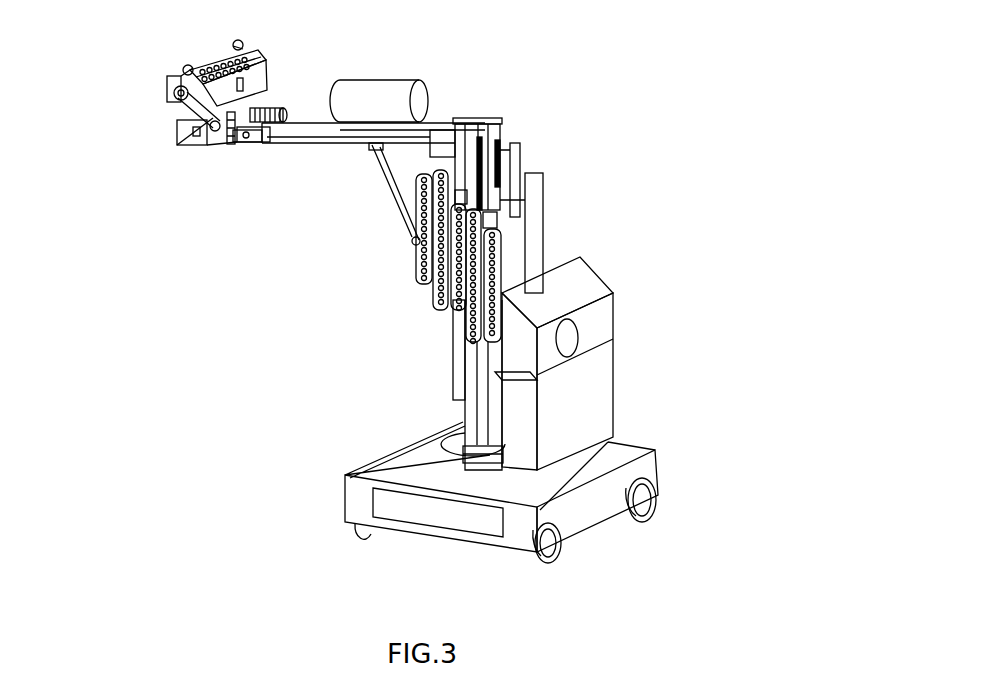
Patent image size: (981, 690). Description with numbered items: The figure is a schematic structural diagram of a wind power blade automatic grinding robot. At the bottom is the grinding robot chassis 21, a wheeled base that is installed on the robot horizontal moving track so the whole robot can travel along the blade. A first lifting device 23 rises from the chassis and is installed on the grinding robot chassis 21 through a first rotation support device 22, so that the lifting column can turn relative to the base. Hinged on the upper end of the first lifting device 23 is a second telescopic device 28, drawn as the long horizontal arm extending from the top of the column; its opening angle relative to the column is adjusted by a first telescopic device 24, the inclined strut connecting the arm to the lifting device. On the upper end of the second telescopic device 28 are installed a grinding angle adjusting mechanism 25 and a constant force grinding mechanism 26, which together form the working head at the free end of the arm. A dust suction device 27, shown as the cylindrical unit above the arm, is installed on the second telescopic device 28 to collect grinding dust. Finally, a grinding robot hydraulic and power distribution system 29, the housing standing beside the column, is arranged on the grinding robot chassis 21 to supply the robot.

The grinding robot chassis 21 is at (345, 521).
The first rotation support device 22 is at (345, 474).
The first lifting device 23 is at (482, 352).
The first telescopic device 24 is at (392, 184).
The grinding angle adjusting mechanism 25 is at (178, 140).
The constant force grinding mechanism 26 is at (262, 80).
The dust suction device 27 is at (387, 97).
The second telescopic device 28 is at (520, 176).
The grinding robot hydraulic and power distribution system 29 is at (585, 395).